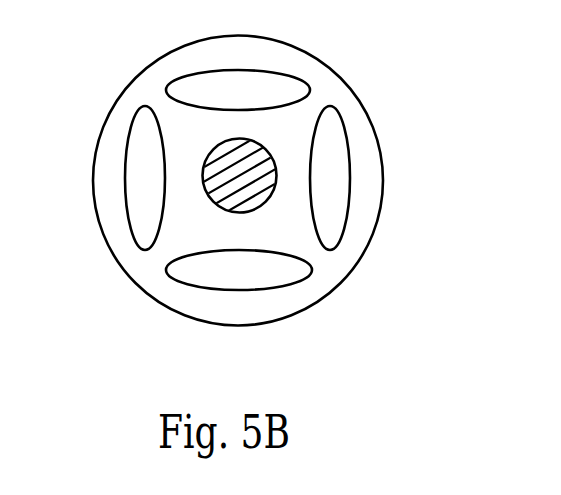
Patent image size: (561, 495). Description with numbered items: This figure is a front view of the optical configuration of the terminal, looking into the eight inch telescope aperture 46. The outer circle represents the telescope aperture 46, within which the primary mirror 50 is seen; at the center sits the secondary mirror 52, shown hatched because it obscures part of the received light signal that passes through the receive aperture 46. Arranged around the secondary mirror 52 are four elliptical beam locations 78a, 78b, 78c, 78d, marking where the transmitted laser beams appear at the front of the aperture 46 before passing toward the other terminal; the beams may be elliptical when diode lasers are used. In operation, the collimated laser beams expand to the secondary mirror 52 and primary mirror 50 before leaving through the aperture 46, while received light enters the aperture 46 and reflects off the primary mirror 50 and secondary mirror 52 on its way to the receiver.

The telescope aperture 46 is at (103, 165).
The primary mirror 50 is at (130, 275).
The secondary mirror 52 is at (273, 197).
The beam location 78a is at (197, 85).
The beam location 78b is at (263, 277).
The beam location 78c is at (343, 140).
The beam location 78d is at (140, 215).